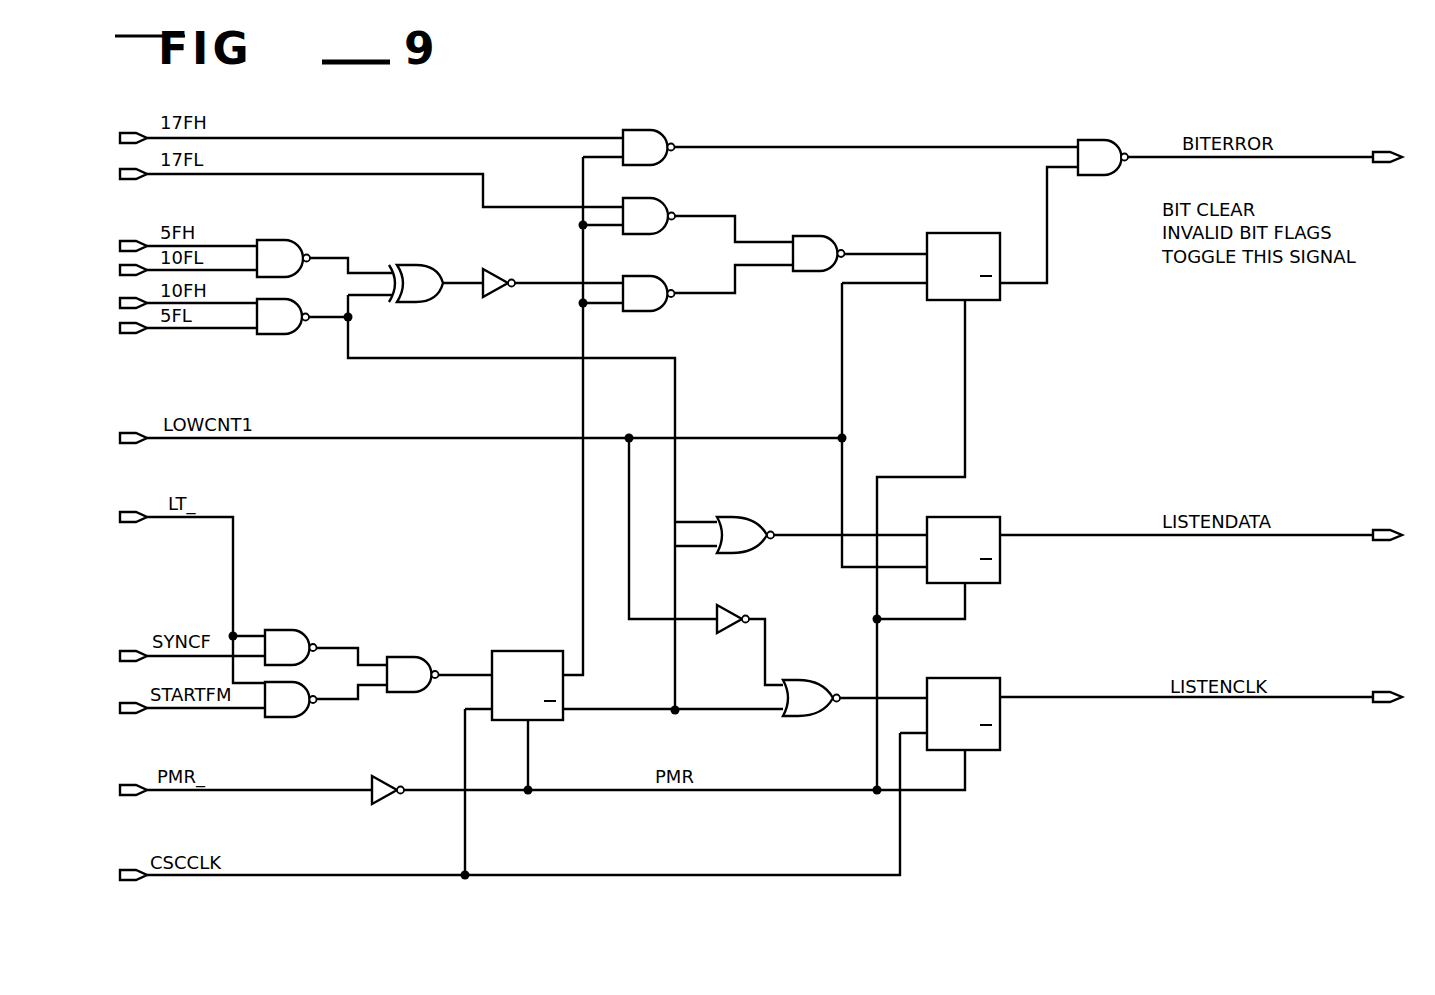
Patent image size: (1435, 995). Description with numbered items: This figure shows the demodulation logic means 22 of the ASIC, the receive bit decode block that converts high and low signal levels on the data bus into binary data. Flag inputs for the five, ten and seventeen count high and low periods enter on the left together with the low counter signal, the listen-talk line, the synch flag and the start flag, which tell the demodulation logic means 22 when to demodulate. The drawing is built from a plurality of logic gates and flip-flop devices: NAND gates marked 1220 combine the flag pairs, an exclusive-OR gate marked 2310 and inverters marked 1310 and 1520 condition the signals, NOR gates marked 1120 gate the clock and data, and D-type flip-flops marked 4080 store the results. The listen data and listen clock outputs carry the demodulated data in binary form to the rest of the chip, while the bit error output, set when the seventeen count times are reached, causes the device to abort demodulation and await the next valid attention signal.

The demodulation logic means 22 is at (1094, 117).
The NAND gate 1220 is at (695, 430).
The exclusive-OR gate 2310 is at (425, 295).
The inverter 1310 is at (616, 464).
The NOR gate 1120 is at (782, 628).
The D flip-flop 4080 is at (765, 504).
The inverter 1520 is at (402, 799).